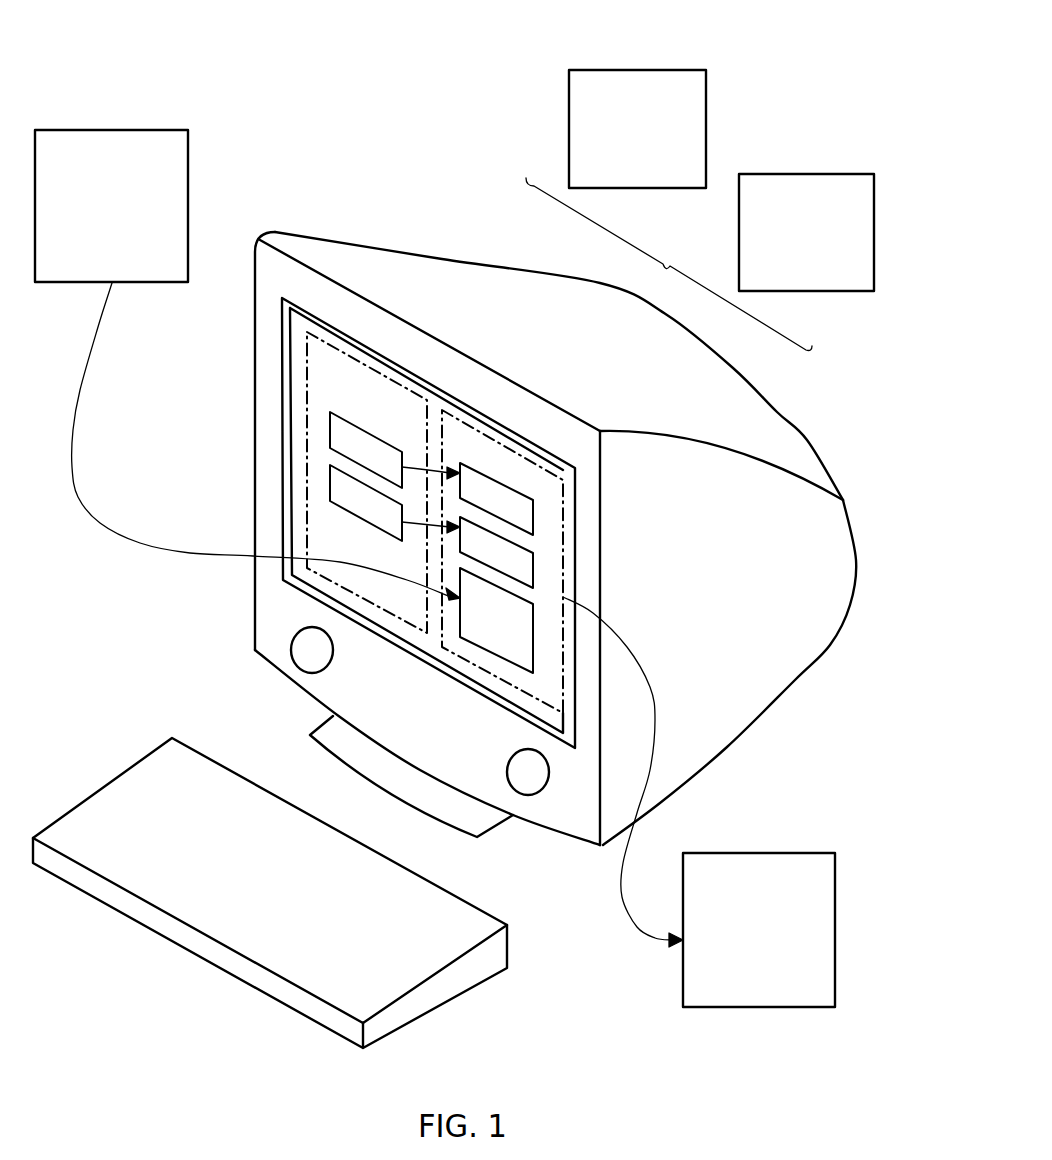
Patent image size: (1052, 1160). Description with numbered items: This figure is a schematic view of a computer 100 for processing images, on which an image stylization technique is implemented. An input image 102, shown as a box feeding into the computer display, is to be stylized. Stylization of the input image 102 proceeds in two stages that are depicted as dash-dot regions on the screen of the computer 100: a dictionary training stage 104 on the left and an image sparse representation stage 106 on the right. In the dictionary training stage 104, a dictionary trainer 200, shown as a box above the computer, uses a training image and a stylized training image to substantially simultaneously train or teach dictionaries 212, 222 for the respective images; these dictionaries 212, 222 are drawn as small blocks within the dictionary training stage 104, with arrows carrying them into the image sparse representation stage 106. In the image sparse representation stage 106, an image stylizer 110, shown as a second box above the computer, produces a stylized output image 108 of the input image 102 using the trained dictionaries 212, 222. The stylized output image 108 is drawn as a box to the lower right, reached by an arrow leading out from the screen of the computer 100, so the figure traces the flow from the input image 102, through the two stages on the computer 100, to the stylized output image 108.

The computer 100 is at (808, 613).
The input image 102 is at (153, 130).
The dictionary training stage 104 is at (363, 367).
The image sparse representation stage 106 is at (493, 440).
The stylized output image 108 is at (800, 853).
The image stylizer 110 is at (807, 173).
The dictionary trainer 200 is at (637, 70).
The dictionary 212 is at (330, 417).
The dictionary 222 is at (330, 468).